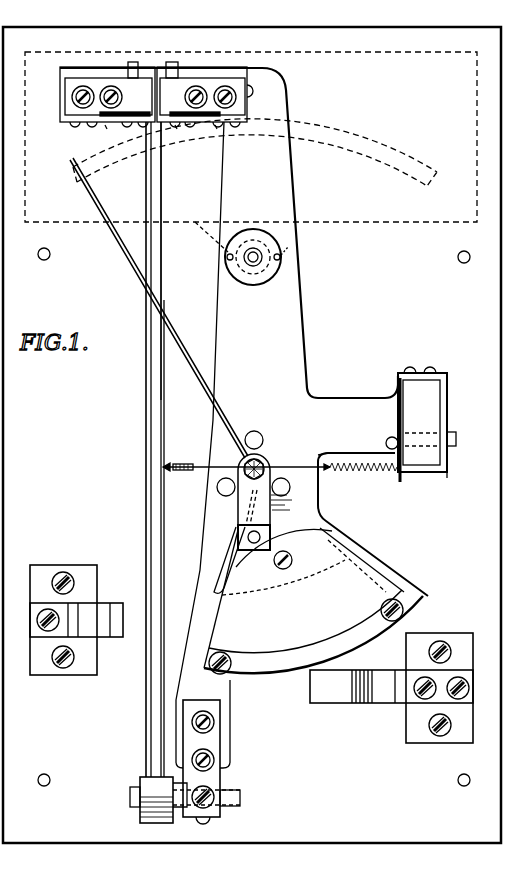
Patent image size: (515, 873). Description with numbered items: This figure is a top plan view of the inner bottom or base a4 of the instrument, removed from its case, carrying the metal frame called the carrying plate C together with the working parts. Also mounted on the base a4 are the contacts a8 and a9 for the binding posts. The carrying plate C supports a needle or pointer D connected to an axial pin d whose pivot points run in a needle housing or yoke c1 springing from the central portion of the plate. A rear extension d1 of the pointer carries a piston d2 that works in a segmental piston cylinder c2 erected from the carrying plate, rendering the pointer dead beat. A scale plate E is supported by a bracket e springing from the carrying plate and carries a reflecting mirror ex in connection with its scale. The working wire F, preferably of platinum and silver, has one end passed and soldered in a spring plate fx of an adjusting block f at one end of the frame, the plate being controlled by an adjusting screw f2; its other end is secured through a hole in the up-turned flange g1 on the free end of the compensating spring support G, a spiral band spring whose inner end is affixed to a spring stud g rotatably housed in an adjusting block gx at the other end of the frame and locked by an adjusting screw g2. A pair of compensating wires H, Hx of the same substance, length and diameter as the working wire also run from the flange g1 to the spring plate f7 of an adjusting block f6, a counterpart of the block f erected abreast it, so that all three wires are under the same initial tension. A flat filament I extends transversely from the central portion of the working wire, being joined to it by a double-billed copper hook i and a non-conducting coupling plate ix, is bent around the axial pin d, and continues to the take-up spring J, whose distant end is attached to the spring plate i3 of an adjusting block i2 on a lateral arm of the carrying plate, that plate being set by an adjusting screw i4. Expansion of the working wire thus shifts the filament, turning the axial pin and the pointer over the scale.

The carrying plate C is at (58, 68).
The scale plate E is at (65, 224).
The working wire F is at (161, 270).
The compensating wire H is at (145, 440).
The compensating wire Hx is at (162, 412).
The needle or pointer D is at (182, 360).
The bracket e is at (294, 250).
The reflecting mirror ex is at (380, 153).
The base a4 is at (393, 298).
The axial pin d is at (268, 458).
The needle housing or yoke c1 is at (275, 508).
The rear extension of the pointer d1 is at (220, 560).
The piston d2 is at (370, 578).
The segmental piston cylinder c2 is at (313, 601).
The double-billed copper hook i is at (246, 453).
The coupling plate ix is at (170, 472).
The take-up spring J is at (356, 470).
The filament I is at (318, 455).
The adjusting block i2 is at (416, 419).
The spring plate i3 is at (401, 480).
The adjusting screw i4 is at (456, 440).
The adjusting block f6 is at (107, 94).
The adjusting block f is at (205, 94).
The spring plate f7 is at (105, 127).
The adjusting screw f2 is at (175, 127).
The spring plate fx is at (215, 127).
The contact a8 is at (330, 693).
The contact a9 is at (95, 620).
The compensating spring support G is at (142, 777).
The up-turned flange g1 is at (130, 794).
The spring stud g is at (240, 800).
The adjusting screw g2 is at (210, 812).
The adjusting block gx is at (212, 778).